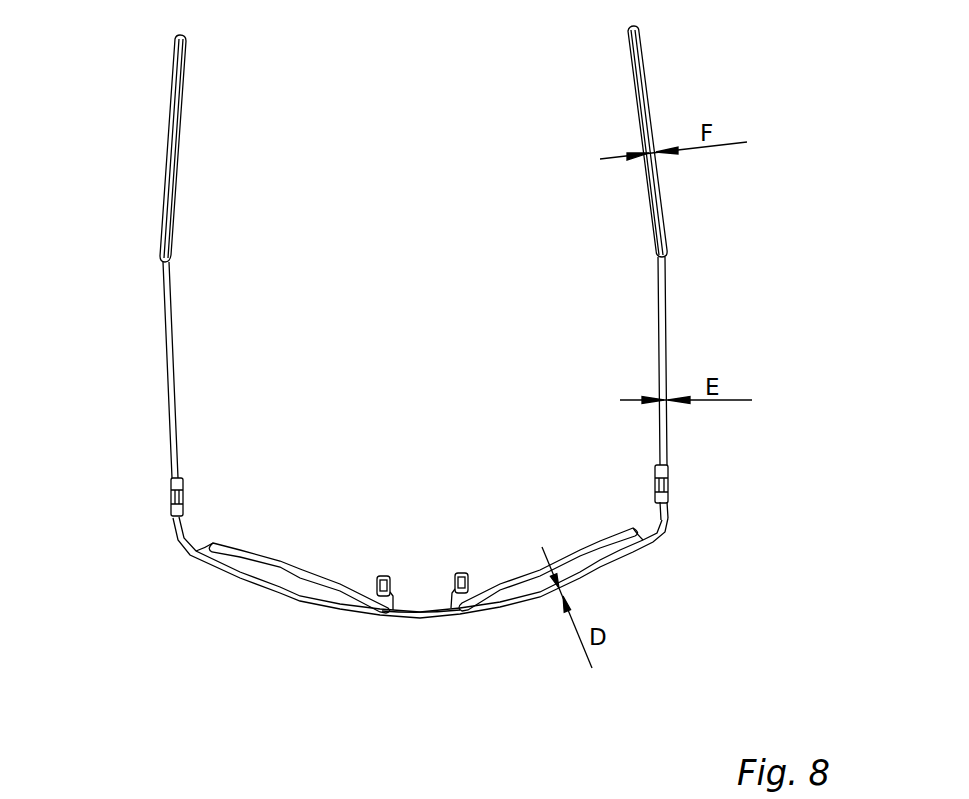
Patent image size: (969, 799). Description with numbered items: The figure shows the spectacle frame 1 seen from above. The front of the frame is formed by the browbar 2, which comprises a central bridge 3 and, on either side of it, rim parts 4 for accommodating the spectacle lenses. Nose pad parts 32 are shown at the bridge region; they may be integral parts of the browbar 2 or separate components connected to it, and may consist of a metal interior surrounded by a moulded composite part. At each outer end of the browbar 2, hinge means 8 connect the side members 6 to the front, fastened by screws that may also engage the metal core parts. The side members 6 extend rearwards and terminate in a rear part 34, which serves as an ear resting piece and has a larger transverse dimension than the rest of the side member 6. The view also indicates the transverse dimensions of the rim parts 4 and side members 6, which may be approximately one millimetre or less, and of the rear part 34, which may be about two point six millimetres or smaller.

The spectacle frame 1 is at (158, 627).
The browbar 2 is at (290, 608).
The bridge 3 is at (413, 623).
The rim parts 4 is at (287, 568).
The side members 6 is at (165, 382).
The hinge means 8 is at (180, 487).
The nose pad parts 32 is at (382, 577).
The rear part 34 is at (163, 173).